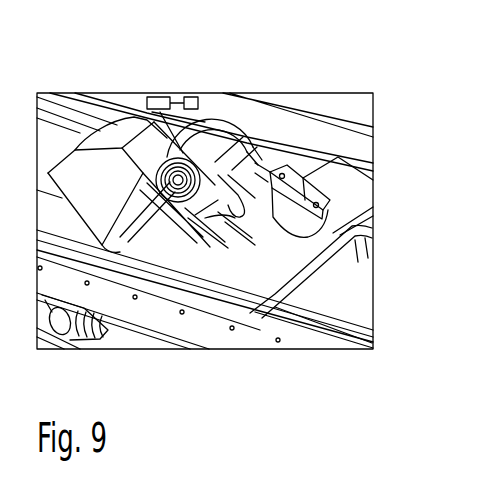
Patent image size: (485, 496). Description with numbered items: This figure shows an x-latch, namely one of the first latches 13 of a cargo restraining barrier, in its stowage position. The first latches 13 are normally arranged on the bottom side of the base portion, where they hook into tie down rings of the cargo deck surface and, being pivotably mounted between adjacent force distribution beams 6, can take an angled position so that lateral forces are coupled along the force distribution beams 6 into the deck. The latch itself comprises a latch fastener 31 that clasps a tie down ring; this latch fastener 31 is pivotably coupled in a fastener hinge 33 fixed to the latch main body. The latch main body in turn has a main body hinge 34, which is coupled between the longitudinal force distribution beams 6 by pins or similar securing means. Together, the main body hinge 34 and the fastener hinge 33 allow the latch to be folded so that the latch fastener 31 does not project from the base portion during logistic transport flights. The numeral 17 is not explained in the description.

The drive block / motor housing 17 is at (111, 170).
The first latch 13 is at (163, 163).
The fastener hinge 33 is at (203, 120).
The latch fastener 31 is at (283, 213).
The force distribution beam 6 is at (300, 338).
The main body hinge 34 is at (83, 342).